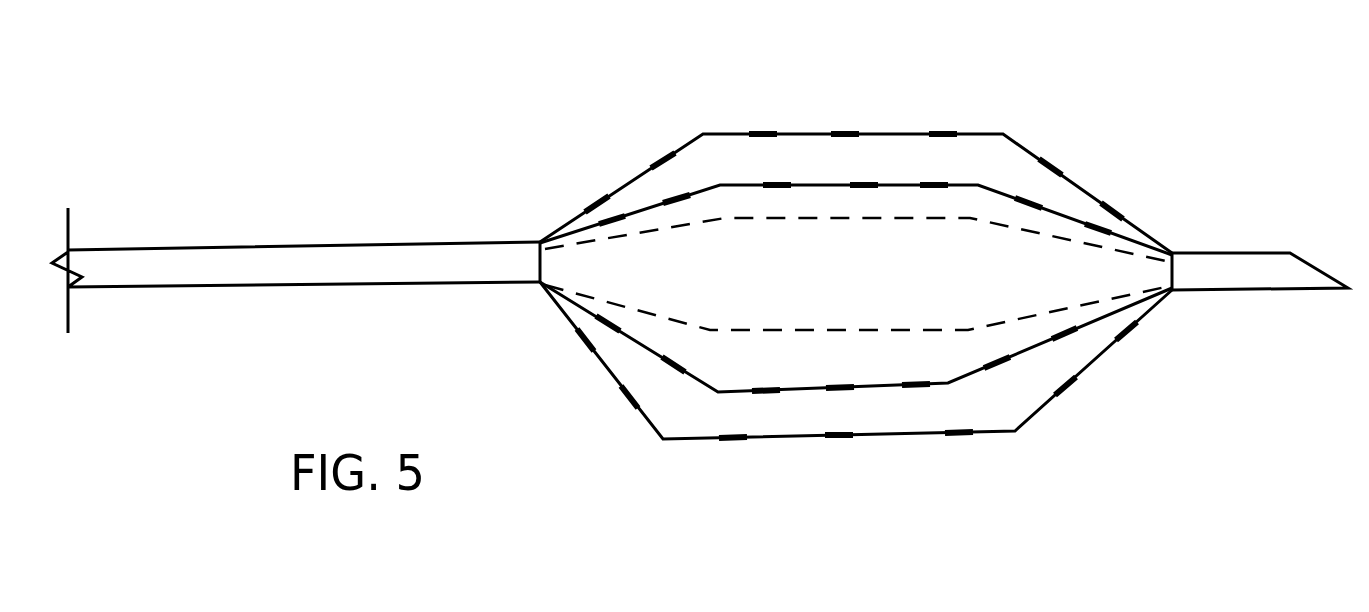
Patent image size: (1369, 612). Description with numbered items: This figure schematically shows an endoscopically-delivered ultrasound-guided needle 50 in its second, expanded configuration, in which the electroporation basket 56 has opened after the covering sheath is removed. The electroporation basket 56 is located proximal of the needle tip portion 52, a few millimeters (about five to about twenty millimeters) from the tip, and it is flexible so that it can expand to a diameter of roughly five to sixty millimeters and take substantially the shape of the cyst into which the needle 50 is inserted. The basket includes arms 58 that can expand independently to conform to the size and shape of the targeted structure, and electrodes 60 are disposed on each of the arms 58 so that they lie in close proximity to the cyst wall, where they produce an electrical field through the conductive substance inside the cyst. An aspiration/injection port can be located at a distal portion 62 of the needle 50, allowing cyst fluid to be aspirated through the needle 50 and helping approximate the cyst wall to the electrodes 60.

The endoscopically-delivered ultrasound-guided needle 50 is at (292, 255).
The needle tip portion 52 is at (1258, 265).
The electroporation basket 56 is at (854, 236).
The arms 58 is at (980, 187).
The electrodes 60 is at (783, 185).
The distal portion 62 is at (535, 260).